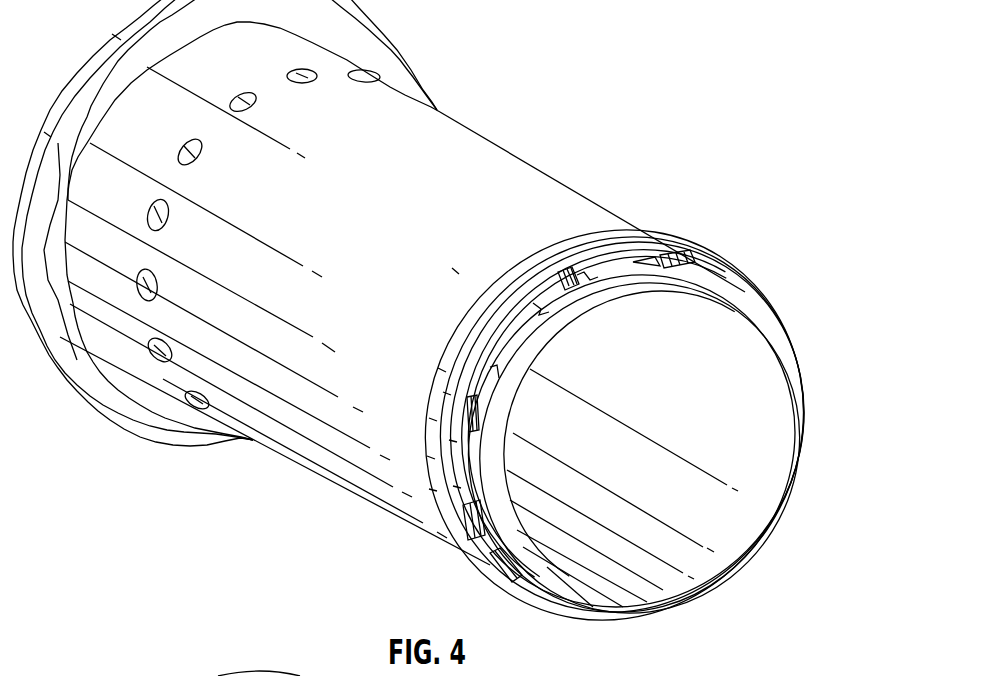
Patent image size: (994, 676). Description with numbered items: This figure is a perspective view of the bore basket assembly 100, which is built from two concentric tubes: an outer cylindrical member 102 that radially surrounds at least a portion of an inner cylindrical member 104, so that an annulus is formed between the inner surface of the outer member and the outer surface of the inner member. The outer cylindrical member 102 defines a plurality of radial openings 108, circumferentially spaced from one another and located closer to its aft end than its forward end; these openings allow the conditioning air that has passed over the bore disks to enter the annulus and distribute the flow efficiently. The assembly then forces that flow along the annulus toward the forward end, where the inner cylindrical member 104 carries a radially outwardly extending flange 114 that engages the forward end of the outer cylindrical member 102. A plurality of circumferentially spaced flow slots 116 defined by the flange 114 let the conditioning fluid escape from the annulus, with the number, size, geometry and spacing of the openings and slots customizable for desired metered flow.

The bore basket assembly 100 is at (580, 166).
The outer cylindrical member 102 is at (490, 160).
The inner cylindrical member 104 is at (790, 479).
The radial opening 108 is at (240, 97).
The flange 114 is at (690, 264).
The flow slot 116 is at (610, 272).